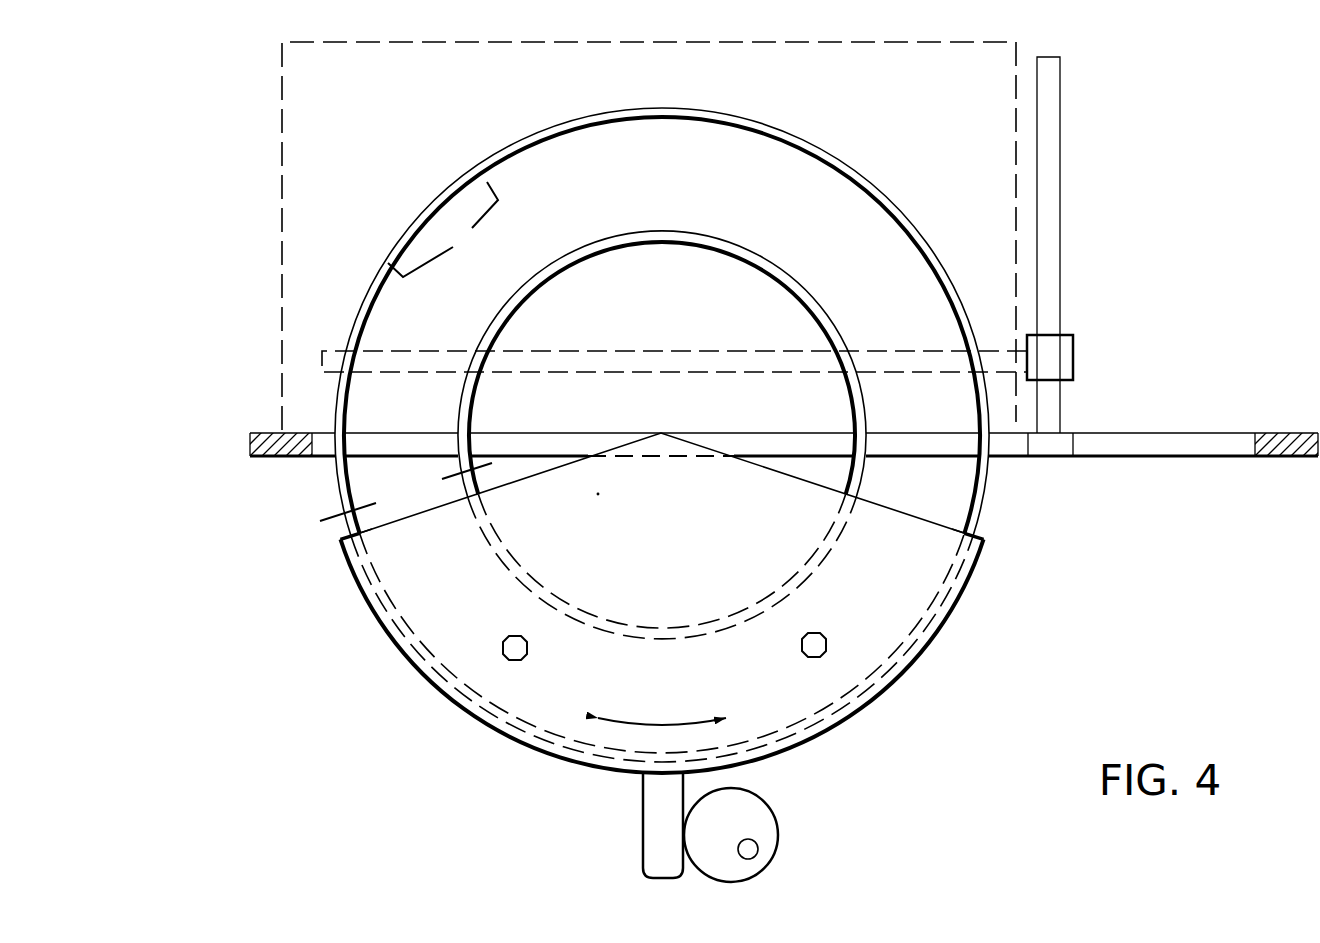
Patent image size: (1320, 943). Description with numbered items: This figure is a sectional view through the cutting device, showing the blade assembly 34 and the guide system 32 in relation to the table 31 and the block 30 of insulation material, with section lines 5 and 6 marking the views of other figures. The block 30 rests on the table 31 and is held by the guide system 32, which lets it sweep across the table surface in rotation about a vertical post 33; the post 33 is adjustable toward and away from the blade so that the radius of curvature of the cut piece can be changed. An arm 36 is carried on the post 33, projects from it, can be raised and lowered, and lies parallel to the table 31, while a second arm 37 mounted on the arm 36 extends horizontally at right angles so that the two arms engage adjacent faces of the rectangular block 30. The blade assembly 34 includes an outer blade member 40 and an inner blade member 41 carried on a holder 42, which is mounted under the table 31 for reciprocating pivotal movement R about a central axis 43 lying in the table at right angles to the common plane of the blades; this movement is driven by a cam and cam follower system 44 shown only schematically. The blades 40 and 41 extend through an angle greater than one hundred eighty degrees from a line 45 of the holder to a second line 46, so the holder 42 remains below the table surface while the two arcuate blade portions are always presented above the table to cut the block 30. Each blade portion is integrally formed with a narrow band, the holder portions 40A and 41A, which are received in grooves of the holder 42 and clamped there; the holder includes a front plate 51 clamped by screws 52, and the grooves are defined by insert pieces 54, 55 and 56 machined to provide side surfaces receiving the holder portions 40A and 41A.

The section line 5- 5 is at (467, 163).
The section line 6- 6 is at (320, 521).
The block 30 is at (283, 127).
The table 31 is at (258, 431).
The guide system 32 is at (1119, 256).
The vertical post 33 is at (1063, 192).
The blade assembly 34 is at (662, 298).
The arm 36 is at (1076, 358).
The second arm 37 is at (662, 346).
The outer blade member 40 is at (572, 111).
The holder portion of outer blade 40A is at (651, 671).
The inner blade member 41 is at (612, 236).
The holder portion of inner blade 41A is at (668, 630).
The holder 42 is at (897, 688).
The central axis 43 is at (661, 430).
The cam and cam follower system 44 is at (797, 857).
The line of the holder 45 is at (397, 515).
The second line of the holder 46 is at (942, 515).
The front plate 51 is at (662, 596).
The screws 52 is at (528, 643).
The insert piece 54 is at (420, 665).
The insert piece 55 is at (442, 605).
The insert piece 56 is at (596, 492).
The reciprocating pivotal movement R is at (660, 720).